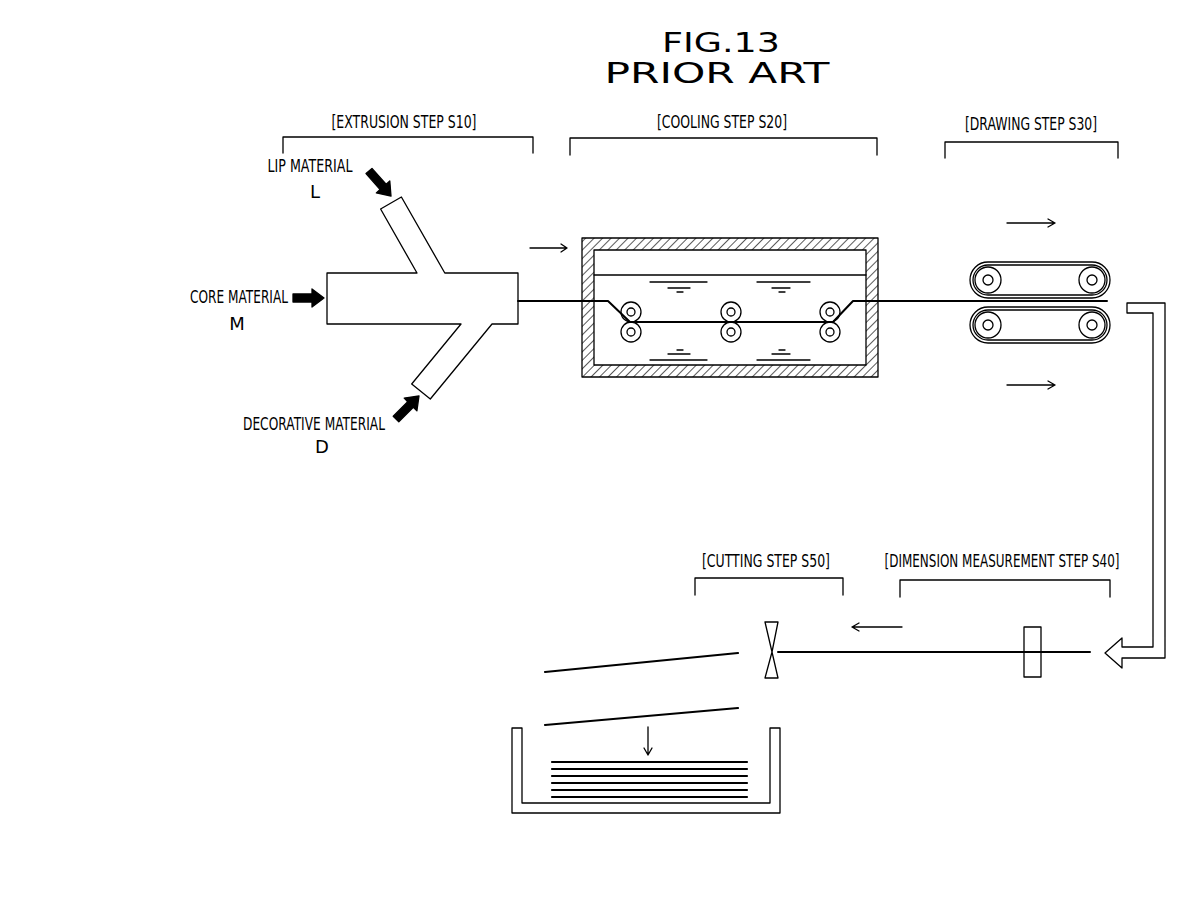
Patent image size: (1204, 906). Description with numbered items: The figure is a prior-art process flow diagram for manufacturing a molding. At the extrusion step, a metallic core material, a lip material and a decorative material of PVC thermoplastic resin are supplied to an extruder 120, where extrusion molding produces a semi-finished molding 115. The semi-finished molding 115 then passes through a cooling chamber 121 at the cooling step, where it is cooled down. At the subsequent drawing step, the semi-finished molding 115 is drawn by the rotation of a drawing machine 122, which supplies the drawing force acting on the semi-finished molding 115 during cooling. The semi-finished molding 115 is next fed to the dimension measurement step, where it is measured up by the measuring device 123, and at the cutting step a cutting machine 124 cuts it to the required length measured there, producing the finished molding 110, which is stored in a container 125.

The molding 110 is at (592, 718).
The semi-finished molding 115 is at (553, 305).
The extruder 120 is at (383, 310).
The cooling chamber 121 is at (733, 238).
The drawing machine 122 is at (1092, 280).
The dimension measuring device 123 is at (1035, 668).
The cutting machine 124 is at (772, 679).
The container 125 is at (518, 777).